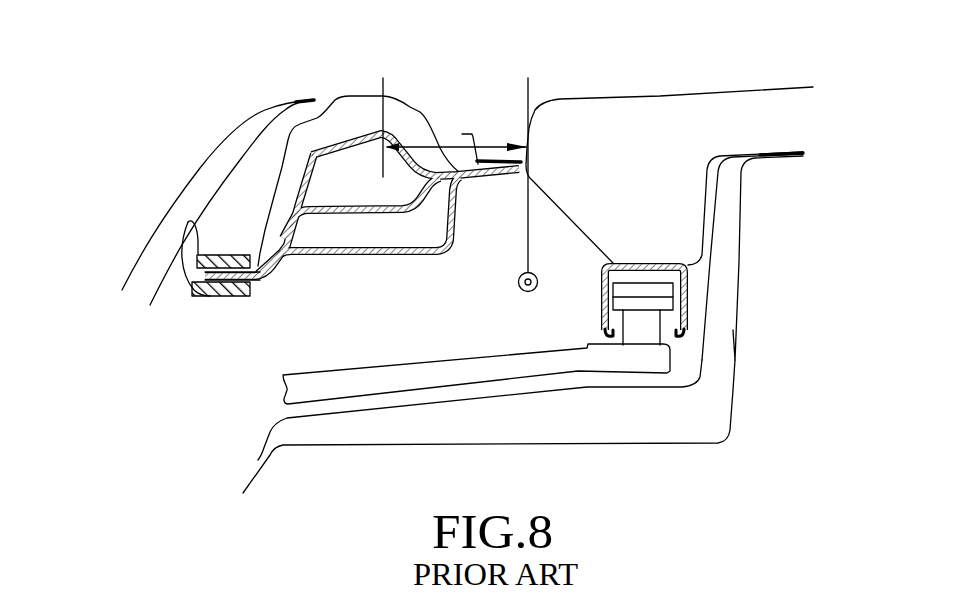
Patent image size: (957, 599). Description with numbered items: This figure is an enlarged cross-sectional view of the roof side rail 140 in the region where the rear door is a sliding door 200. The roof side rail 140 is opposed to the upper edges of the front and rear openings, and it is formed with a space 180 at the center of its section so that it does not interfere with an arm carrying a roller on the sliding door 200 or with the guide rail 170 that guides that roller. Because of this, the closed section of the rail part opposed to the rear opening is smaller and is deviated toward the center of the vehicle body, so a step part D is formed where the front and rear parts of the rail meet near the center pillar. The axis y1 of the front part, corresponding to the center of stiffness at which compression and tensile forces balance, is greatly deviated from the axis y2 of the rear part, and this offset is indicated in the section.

The roof side rail 140 is at (397, 90).
The sliding door 200 is at (137, 268).
The space 180 is at (594, 266).
The guide rail 170 is at (687, 322).
The step part D is at (757, 197).
The axis y1 is at (383, 92).
The axis y2 is at (520, 285).